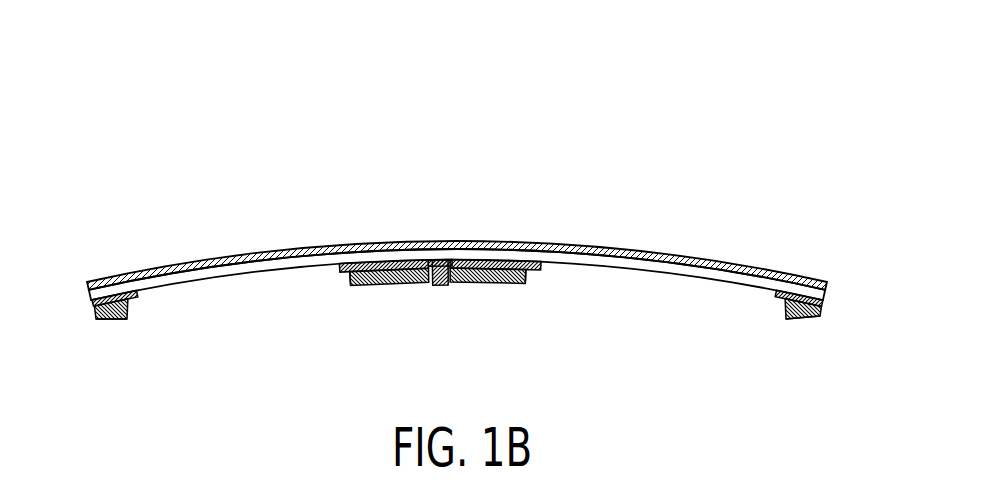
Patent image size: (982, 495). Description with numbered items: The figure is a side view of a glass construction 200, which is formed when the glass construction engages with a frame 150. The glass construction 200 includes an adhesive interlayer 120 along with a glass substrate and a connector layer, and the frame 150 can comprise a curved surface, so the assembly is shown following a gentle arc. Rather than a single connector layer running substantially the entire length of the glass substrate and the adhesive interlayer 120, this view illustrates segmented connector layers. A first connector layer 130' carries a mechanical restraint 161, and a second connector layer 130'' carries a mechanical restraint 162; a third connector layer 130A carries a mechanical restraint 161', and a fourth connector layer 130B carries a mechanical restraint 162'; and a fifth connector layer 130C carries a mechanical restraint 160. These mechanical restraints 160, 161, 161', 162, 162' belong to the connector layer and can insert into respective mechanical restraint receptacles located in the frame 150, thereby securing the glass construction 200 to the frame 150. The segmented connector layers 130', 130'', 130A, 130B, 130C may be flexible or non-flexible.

The glass construction 200 is at (180, 211).
The adhesive interlayer 120 is at (830, 283).
The third connector layer 130A is at (136, 296).
The fourth connector layer 130B is at (340, 265).
The fifth connector layer 130C is at (438, 280).
The first connector layer 130' is at (765, 309).
The second connector layer 130'' is at (534, 282).
The frame 150 is at (94, 316).
The mechanical restraint 160 is at (438, 286).
The mechanical restraint 161 is at (804, 353).
The mechanical restraint 161' is at (108, 354).
The mechanical restraint 162 is at (515, 312).
The mechanical restraint 162' is at (368, 314).